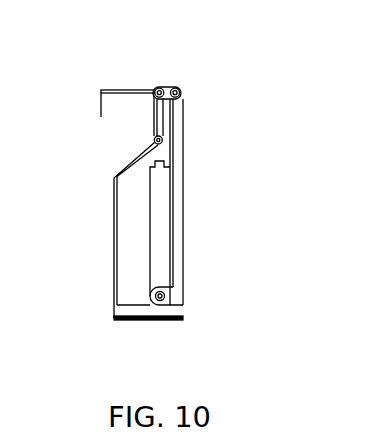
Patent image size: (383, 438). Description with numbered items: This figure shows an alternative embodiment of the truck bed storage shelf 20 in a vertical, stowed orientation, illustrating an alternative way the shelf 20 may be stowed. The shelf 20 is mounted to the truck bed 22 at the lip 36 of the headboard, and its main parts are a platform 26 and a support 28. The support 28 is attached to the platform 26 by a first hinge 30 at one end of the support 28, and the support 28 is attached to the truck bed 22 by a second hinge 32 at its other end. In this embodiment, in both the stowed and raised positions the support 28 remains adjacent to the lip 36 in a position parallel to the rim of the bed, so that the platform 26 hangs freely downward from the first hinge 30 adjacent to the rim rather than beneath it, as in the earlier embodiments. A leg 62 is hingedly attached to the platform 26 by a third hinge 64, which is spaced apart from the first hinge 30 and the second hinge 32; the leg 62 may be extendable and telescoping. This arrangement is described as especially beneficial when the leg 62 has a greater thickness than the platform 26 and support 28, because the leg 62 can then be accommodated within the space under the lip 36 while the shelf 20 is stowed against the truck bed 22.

The truck bed storage shelf 20 is at (192, 72).
The truck bed 22 is at (153, 322).
The platform 26 is at (184, 128).
The support 28 is at (163, 118).
The first hinge 30 is at (156, 86).
The second hinge 32 is at (143, 152).
The lip 36 is at (118, 102).
The leg 62 is at (165, 220).
The third hinge 64 is at (172, 293).